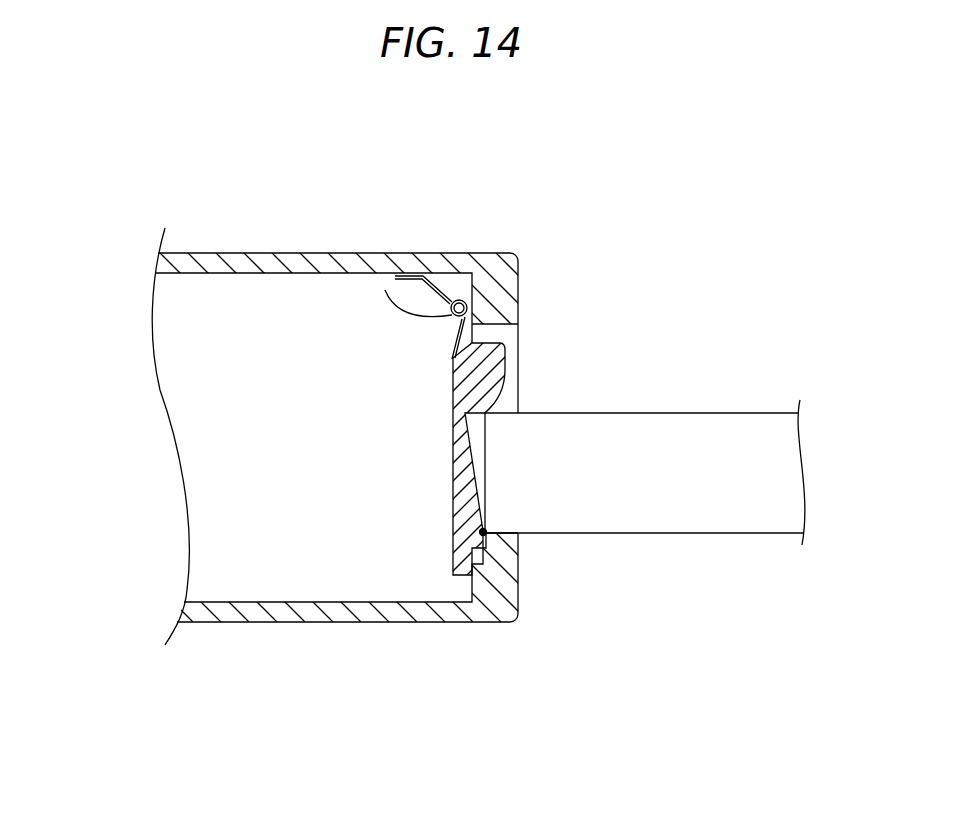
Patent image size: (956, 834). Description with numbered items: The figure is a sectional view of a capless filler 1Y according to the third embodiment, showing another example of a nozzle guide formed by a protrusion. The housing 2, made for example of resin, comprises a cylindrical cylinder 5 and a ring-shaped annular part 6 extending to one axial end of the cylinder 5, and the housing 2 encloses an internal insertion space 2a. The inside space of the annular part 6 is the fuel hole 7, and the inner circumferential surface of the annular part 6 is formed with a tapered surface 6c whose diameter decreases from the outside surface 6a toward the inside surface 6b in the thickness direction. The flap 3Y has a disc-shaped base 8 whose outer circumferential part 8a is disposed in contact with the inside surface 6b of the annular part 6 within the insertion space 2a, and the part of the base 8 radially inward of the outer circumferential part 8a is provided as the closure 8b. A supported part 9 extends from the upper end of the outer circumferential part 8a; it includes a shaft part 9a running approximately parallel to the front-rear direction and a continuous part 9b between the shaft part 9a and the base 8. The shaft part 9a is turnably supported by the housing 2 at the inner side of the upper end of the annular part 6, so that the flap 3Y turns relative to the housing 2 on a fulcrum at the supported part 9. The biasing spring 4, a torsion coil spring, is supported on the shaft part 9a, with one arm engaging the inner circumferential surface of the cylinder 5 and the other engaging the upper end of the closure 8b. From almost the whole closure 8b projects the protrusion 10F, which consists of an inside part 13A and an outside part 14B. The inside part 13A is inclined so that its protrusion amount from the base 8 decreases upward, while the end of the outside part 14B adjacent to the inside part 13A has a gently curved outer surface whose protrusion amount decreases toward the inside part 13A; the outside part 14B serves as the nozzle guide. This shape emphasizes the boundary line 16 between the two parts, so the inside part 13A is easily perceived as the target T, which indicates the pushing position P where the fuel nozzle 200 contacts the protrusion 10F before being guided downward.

The capless filler 1Y is at (128, 208).
The housing 2 is at (203, 253).
The insertion space 2a is at (228, 340).
The biasing spring 4 is at (390, 290).
The supported part 9 is at (459, 299).
The shaft part 9a is at (452, 299).
The continuous part 9b is at (467, 322).
The annular part 6 is at (517, 286).
The outside surface 6a is at (518, 306).
The inside surface 6b is at (473, 587).
The tapered surface 6c is at (508, 583).
The fuel hole 7 is at (502, 562).
The cylinder 5 is at (258, 612).
The flap 3Y is at (453, 510).
The base 8 is at (453, 475).
The outer circumferential part 8a is at (453, 566).
The closure 8b is at (453, 443).
The protrusion 10F is at (503, 352).
The outside part 14B is at (503, 381).
The boundary line 16 is at (485, 426).
The pushing position P is at (486, 534).
The fuel nozzle 200 is at (735, 522).
The target T is at (485, 497).
The inside part 13A is at (485, 477).